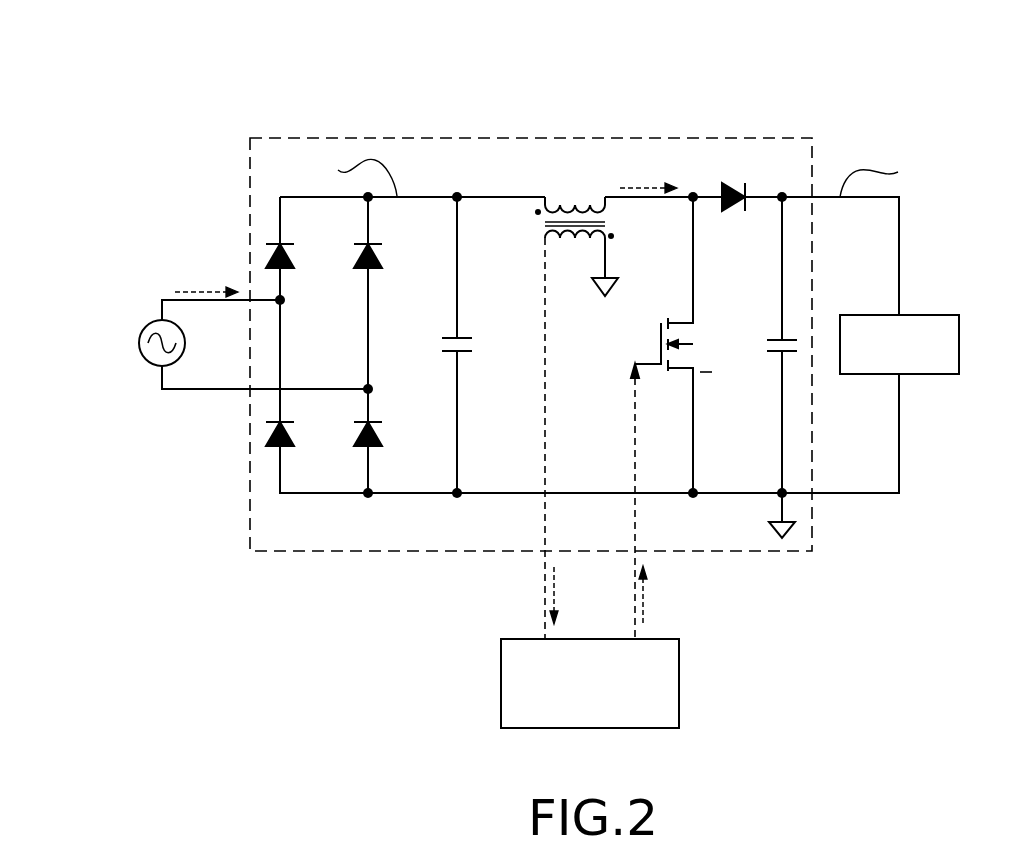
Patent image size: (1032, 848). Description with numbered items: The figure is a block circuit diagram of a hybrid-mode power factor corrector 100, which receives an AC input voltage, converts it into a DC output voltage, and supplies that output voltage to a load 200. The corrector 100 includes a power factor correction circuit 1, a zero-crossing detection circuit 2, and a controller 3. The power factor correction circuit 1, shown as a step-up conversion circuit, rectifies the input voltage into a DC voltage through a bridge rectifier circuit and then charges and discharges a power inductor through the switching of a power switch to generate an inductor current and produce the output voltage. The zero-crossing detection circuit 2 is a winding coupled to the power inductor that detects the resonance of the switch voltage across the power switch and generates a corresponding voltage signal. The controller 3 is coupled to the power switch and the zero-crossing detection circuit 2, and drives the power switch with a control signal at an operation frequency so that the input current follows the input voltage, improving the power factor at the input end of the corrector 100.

The hybrid-mode power factor corrector 100 is at (611, 49).
The power factor correction circuit 1 is at (531, 143).
The zero-crossing detection circuit 2 is at (567, 243).
The controller 3 is at (672, 685).
The load 200 is at (912, 322).